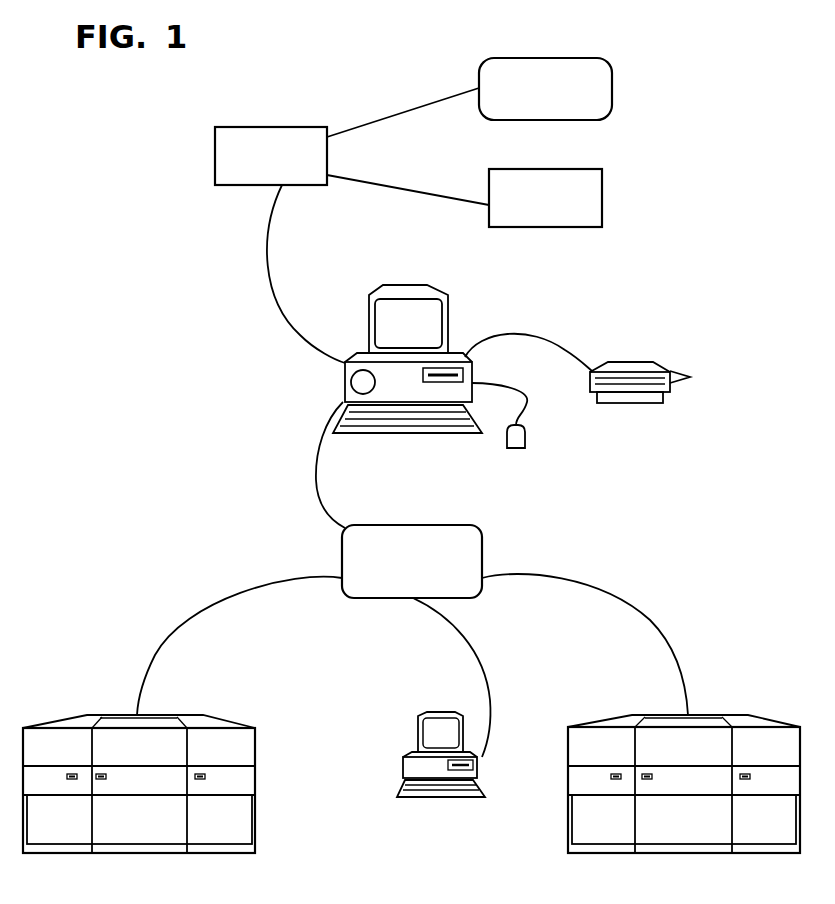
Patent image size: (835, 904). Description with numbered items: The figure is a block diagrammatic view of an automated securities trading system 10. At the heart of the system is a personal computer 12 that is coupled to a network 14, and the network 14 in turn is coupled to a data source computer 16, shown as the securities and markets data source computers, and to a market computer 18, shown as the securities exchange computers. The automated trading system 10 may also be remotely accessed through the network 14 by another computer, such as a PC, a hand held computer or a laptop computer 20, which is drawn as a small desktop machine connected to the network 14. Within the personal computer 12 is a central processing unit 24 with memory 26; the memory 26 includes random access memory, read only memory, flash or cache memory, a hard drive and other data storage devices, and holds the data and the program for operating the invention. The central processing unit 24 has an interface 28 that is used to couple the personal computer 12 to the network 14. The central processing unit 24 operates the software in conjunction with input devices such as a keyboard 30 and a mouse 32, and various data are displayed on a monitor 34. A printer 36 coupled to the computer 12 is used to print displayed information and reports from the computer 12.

The automated securities trading system 10 is at (207, 356).
The personal computer 12 is at (348, 384).
The network 14 is at (445, 525).
The data source computer 16 is at (205, 717).
The market computer 18 is at (750, 717).
The laptop computer 20 is at (403, 768).
The central processing unit 24 is at (267, 127).
The memory 26 is at (540, 58).
The interface 28 is at (602, 201).
The keyboard 30 is at (407, 433).
The mouse 32 is at (526, 440).
The monitor 34 is at (431, 287).
The printer 36 is at (620, 362).